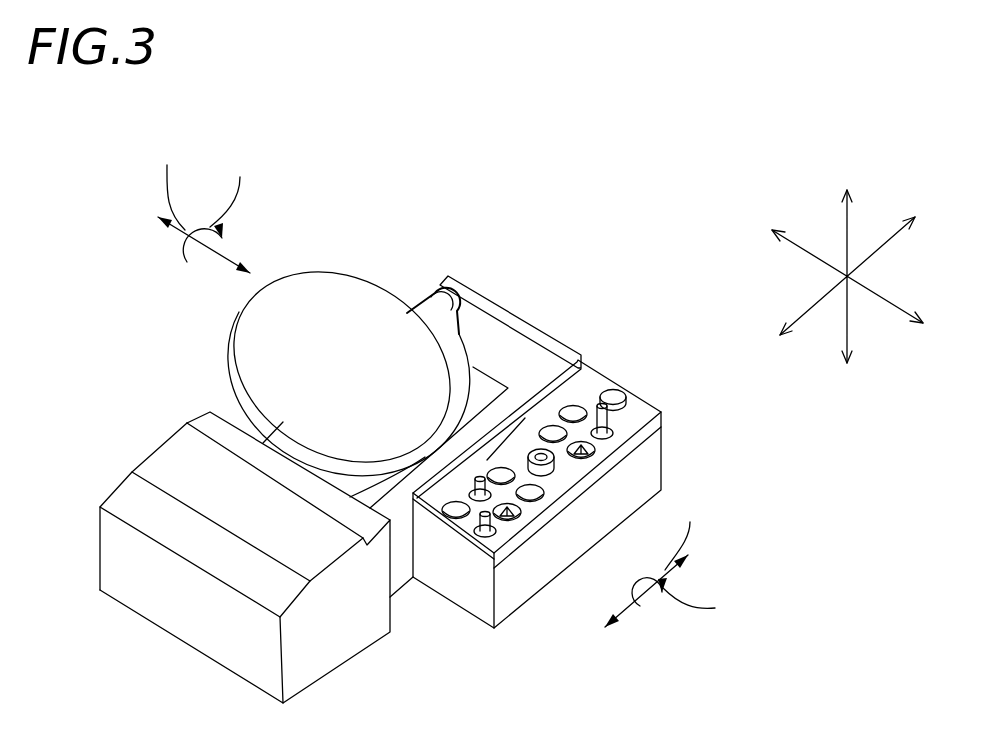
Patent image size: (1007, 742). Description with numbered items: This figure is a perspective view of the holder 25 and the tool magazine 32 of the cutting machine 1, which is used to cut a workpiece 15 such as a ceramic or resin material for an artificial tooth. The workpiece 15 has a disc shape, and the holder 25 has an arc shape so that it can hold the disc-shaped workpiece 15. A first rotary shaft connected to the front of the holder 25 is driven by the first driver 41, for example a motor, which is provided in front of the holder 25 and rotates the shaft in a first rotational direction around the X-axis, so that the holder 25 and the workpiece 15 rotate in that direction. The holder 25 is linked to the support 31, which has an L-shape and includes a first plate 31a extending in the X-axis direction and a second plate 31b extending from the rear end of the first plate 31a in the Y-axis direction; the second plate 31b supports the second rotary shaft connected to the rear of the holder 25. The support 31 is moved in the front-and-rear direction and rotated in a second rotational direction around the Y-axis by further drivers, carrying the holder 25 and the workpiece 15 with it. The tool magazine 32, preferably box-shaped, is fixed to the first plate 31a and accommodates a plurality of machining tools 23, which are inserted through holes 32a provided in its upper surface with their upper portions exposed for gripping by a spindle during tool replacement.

The cutting machine 1 is at (590, 168).
The workpiece 15 is at (310, 272).
The machining tools 23 is at (628, 395).
The holder 25 is at (430, 318).
The support 31 is at (424, 454).
The first plate 31a is at (400, 572).
The second plate 31b is at (520, 327).
The tool magazine 32 is at (613, 385).
The holes 32a is at (590, 455).
The first driver 41 is at (183, 462).